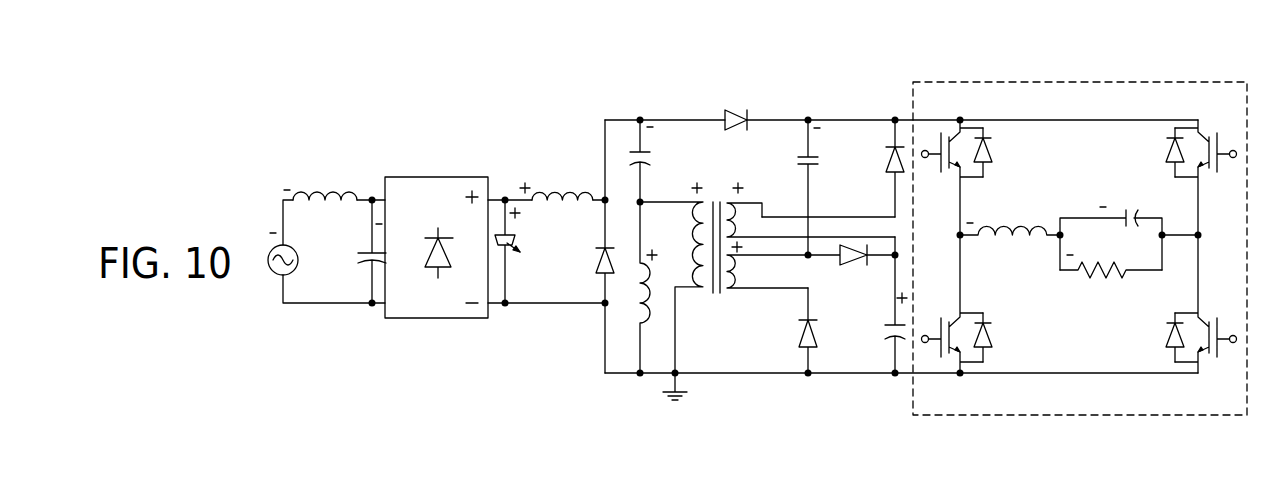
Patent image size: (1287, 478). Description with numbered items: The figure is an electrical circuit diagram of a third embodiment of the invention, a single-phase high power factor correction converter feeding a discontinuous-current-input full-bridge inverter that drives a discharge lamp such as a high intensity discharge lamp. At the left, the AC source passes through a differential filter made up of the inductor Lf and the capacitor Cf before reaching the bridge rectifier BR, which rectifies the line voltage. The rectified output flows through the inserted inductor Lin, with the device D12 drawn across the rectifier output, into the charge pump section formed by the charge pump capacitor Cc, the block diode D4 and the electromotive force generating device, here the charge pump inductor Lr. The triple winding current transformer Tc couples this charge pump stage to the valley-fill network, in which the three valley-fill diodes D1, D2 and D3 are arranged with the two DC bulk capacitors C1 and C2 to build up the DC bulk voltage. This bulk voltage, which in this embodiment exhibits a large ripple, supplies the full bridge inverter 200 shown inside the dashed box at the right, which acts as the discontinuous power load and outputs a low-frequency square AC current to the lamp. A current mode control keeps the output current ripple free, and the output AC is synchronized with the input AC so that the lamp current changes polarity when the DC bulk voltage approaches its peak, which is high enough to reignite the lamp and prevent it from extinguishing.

The inductor Lf is at (325, 212).
The capacitor Cf is at (357, 251).
The bridge rectifier BR is at (433, 320).
The diode / controlled rectifier D12 is at (531, 251).
The inserted inductor Lin is at (556, 179).
The block diode D4 is at (734, 105).
The charge pump capacitor Cc is at (654, 161).
The charge pump inductor Lr is at (634, 287).
The triple winding current transformer Tc is at (767, 265).
The DC bulk capacitor C1 is at (793, 187).
The valley-fill diode D2 is at (875, 168).
The valley-fill diode D3 is at (851, 272).
The valley-fill diode D1 is at (788, 330).
The DC bulk capacitor C2 is at (874, 314).
The full bridge inverter 200 is at (1102, 82).